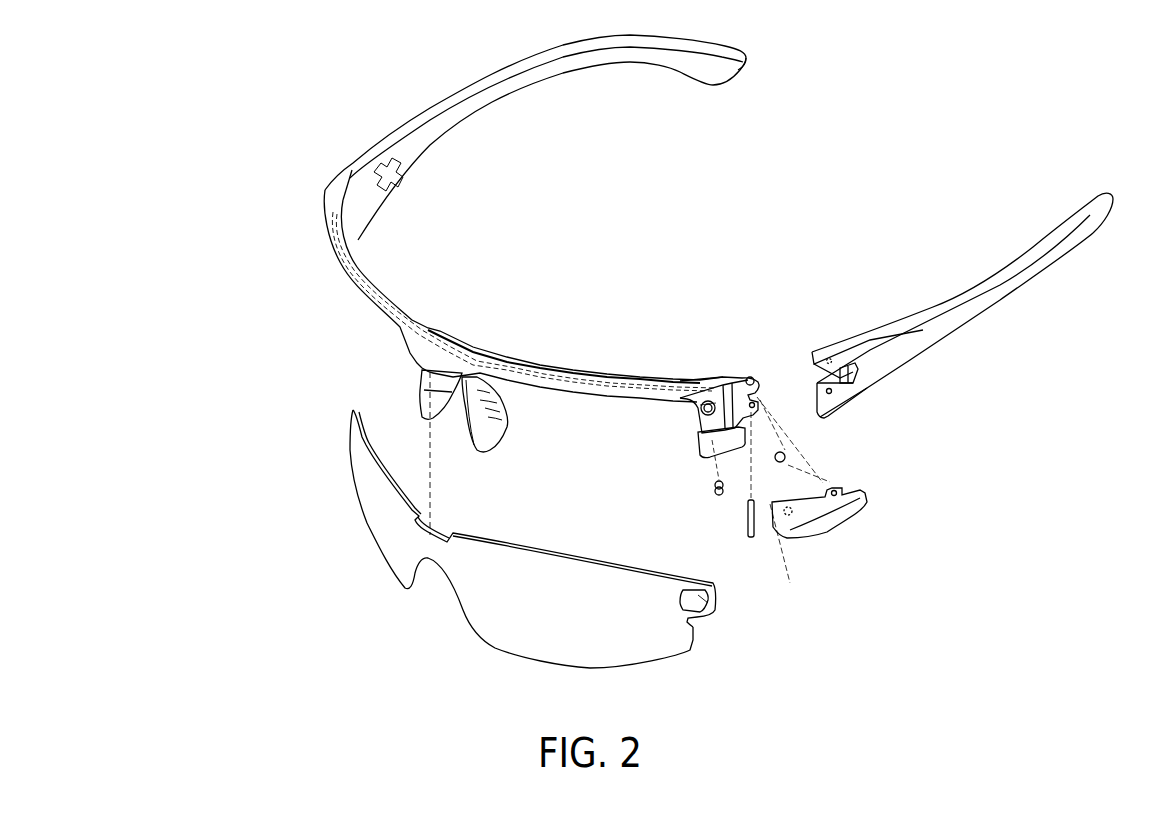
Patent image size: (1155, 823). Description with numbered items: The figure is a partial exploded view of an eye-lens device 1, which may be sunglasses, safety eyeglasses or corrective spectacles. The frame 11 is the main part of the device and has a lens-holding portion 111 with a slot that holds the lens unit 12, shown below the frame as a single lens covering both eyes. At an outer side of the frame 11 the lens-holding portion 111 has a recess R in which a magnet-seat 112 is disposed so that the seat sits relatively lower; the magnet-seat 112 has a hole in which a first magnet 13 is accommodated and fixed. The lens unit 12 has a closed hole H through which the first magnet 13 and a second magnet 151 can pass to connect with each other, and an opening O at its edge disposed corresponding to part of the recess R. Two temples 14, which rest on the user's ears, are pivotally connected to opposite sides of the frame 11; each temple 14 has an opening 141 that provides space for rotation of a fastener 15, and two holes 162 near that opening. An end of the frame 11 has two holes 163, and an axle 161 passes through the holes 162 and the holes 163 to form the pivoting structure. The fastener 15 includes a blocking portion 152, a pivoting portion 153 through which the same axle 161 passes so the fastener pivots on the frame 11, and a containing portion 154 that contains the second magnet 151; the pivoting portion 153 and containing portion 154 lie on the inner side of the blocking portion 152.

The eye-lens device 1 is at (190, 103).
The frame 11 is at (457, 332).
The lens-holding portion 111 is at (372, 301).
The magnet-seat 112 is at (700, 380).
The lens unit 12 is at (463, 612).
The first magnet 13 is at (714, 487).
The temple 14 is at (487, 75).
The opening 141 is at (850, 388).
The fastener 15 is at (848, 510).
The second magnet 151 is at (783, 456).
The blocking portion 152 is at (815, 512).
The pivoting portion 153 is at (838, 488).
The containing portion 154 is at (787, 522).
The axle 161 is at (748, 520).
The hole 162 is at (817, 375).
The hole 163 is at (762, 395).
The recess R is at (703, 412).
The hole H is at (708, 605).
The opening O is at (693, 632).